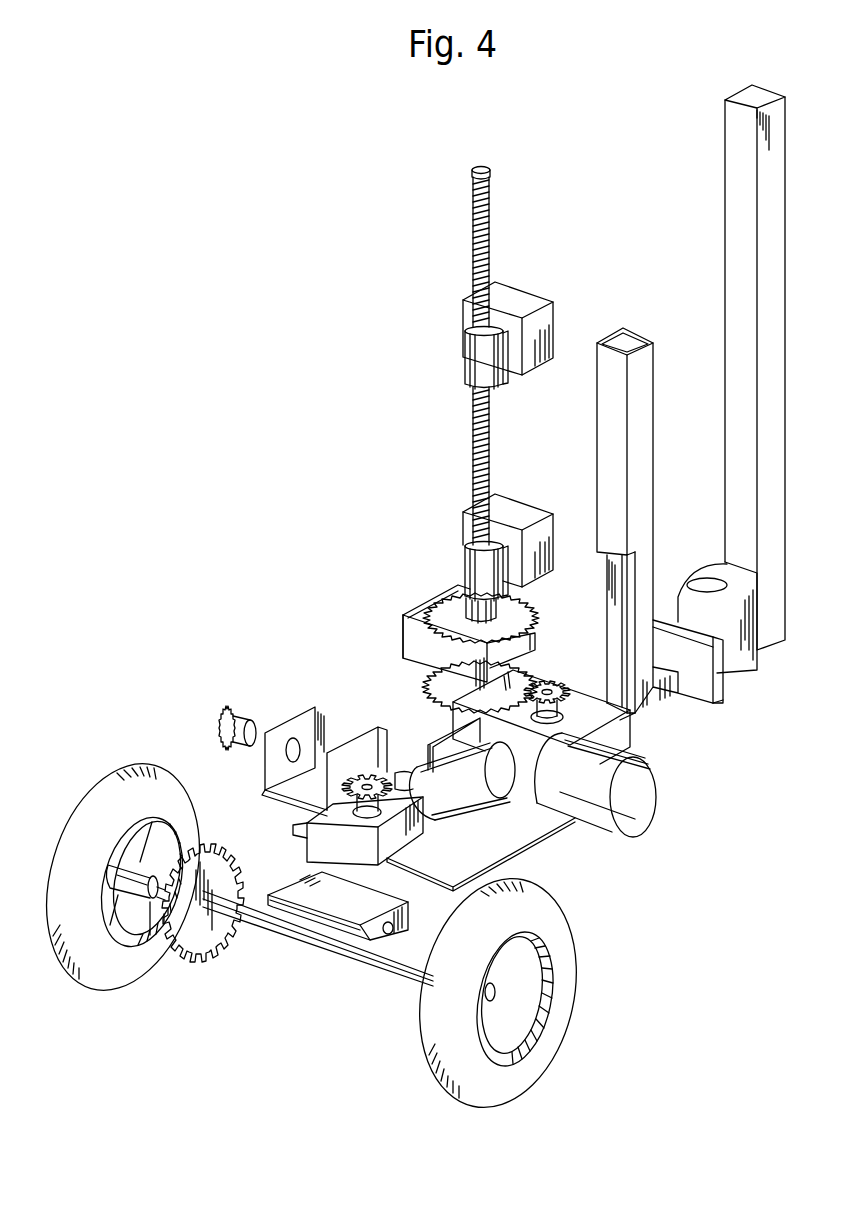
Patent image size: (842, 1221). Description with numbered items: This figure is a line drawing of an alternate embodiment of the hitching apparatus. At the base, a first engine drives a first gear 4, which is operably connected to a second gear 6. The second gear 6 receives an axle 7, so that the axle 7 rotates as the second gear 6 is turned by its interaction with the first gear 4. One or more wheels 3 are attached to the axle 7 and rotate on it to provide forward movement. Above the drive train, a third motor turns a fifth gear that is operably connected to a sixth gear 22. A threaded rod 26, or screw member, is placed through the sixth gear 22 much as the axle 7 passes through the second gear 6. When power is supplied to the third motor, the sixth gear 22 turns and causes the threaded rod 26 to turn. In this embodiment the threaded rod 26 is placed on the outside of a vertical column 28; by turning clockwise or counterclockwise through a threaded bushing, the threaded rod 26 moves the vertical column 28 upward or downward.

The wheel 3 is at (543, 905).
The first gear 4 is at (237, 705).
The second gear 6 is at (185, 938).
The axle 7 is at (382, 957).
The sixth gear 22 is at (425, 605).
The threaded rod 26 is at (477, 410).
The vertical column 28 is at (640, 383).